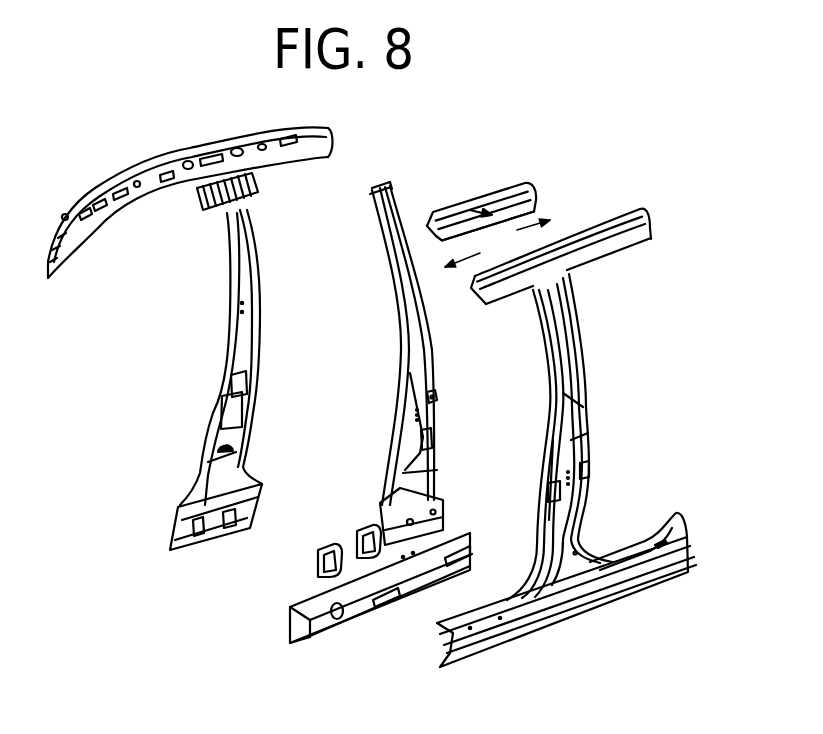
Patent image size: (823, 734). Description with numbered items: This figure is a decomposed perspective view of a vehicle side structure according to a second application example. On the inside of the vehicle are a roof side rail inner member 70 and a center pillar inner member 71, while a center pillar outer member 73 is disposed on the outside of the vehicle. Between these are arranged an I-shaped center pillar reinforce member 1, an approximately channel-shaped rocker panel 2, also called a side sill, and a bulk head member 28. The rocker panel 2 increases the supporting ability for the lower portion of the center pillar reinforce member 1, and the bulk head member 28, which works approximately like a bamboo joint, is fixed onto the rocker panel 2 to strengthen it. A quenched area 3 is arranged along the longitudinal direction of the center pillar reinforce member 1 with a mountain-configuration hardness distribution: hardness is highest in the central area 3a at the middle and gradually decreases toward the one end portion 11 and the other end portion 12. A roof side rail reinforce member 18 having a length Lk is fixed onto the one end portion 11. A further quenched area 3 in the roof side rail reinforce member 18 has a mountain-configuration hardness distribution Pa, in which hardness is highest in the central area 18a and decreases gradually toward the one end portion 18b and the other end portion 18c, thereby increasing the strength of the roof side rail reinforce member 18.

The center pillar reinforce member 1 is at (393, 323).
The rocker panel 2 is at (297, 600).
The quenched area 3 is at (523, 218).
The central area 3a is at (434, 400).
The one end portion 11 is at (375, 200).
The other end portion 12 is at (437, 510).
The roof side rail reinforce member 18 is at (550, 183).
The central area 18a is at (417, 212).
The one end portion 18b is at (420, 208).
The other end portion 18c is at (480, 198).
The bulk head member 28 is at (363, 531).
The roof side rail inner member 70 is at (151, 191).
The center pillar inner member 71 is at (227, 302).
The center pillar outer member 73 is at (563, 393).
The mountain-configuration hardness distribution Pa is at (457, 167).
The length Lk is at (497, 245).